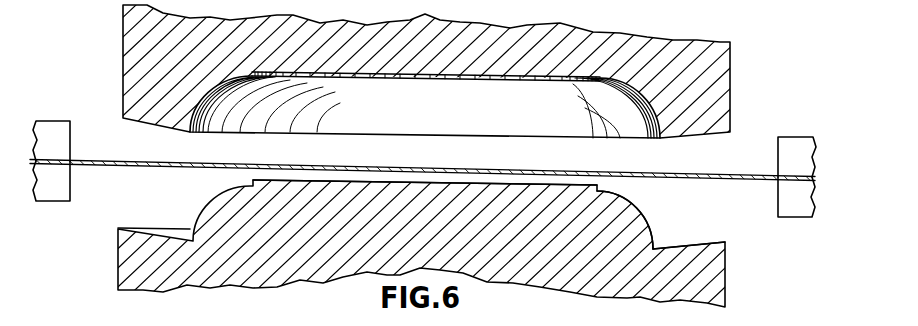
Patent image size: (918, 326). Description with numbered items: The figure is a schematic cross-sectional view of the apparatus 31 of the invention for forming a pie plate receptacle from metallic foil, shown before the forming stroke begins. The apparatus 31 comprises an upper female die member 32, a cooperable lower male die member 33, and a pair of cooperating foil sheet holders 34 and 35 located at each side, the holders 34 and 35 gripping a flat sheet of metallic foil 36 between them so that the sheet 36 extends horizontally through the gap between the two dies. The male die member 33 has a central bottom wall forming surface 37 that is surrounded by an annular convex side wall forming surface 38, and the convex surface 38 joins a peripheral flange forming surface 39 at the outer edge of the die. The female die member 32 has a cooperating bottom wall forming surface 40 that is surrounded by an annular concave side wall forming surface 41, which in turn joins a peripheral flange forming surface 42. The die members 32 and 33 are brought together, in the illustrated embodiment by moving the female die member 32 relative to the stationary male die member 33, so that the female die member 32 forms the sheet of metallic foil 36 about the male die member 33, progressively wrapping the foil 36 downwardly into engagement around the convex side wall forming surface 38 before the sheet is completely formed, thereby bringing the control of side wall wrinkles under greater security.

The apparatus 31 is at (760, 32).
The female die member 32 is at (617, 42).
The male die member 33 is at (307, 268).
The foil sheet holder 34 is at (53, 128).
The foil sheet holder 35 is at (57, 195).
The sheet of metallic foil 36 is at (710, 172).
The bottom wall forming surface 37 is at (473, 185).
The annular convex side wall forming surface 38 is at (633, 198).
The peripheral flange forming surface 39 is at (690, 241).
The bottom wall forming surface 40 is at (376, 86).
The annular concave side wall forming surface 41 is at (200, 97).
The peripheral flange forming surface 42 is at (687, 140).